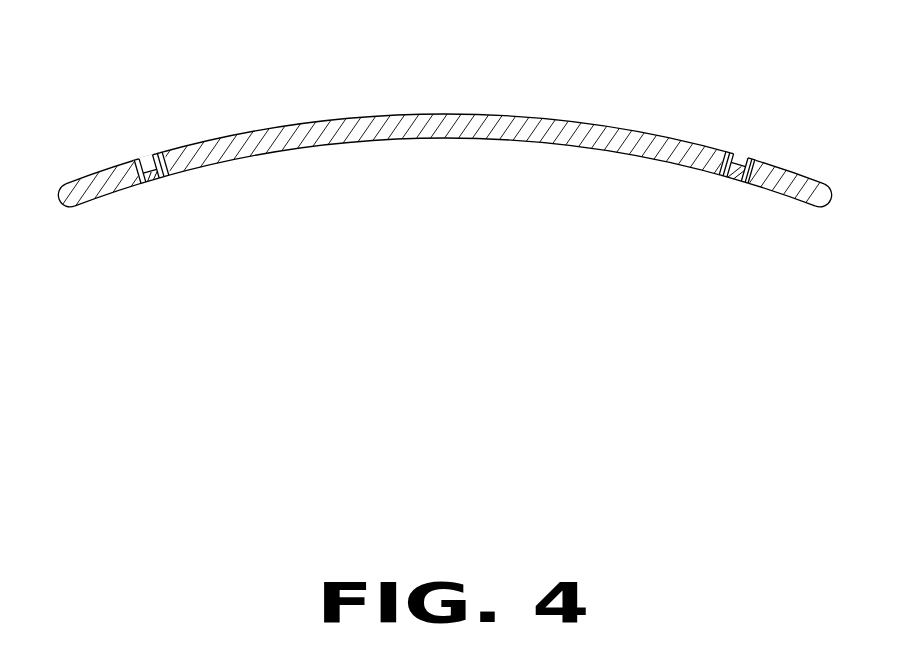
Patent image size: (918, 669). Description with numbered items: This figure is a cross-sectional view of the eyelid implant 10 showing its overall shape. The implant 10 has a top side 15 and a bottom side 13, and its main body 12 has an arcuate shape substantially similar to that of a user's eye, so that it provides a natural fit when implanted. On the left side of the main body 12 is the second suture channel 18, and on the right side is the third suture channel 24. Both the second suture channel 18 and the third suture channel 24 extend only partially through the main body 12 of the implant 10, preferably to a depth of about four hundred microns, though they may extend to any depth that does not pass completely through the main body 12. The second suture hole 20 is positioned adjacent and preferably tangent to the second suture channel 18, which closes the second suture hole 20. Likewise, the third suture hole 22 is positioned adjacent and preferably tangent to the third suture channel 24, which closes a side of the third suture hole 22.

The eyelid implant 10 is at (435, 169).
The main body 12 is at (435, 169).
The bottom side 13 is at (490, 140).
The top side 15 is at (352, 118).
The second suture channel 18 is at (137, 167).
The second suture hole 20 is at (156, 185).
The third suture hole 22 is at (735, 183).
The third suture channel 24 is at (756, 176).